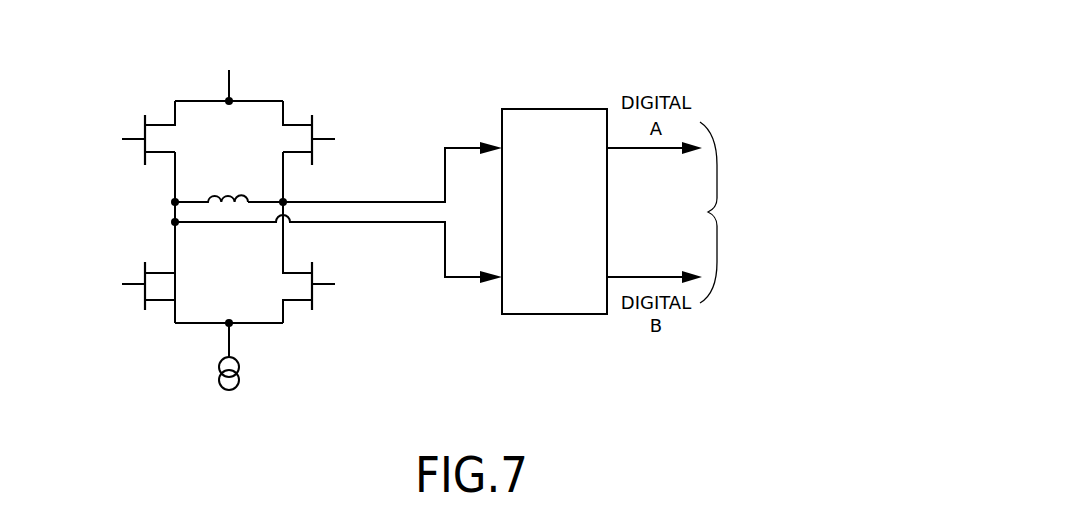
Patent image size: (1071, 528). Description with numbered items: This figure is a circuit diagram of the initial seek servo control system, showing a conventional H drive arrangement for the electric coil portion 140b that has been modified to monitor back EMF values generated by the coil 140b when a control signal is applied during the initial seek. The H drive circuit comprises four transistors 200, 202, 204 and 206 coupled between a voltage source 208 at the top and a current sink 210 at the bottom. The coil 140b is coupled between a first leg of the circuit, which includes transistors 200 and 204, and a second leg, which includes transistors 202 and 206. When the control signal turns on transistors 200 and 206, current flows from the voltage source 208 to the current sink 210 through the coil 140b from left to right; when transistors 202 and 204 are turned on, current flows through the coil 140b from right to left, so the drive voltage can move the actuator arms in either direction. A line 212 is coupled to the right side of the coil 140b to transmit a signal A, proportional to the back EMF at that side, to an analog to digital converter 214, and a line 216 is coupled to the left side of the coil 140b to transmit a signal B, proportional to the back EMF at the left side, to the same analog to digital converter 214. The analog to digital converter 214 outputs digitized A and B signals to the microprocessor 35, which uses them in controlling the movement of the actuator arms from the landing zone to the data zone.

The transistor 200 is at (143, 118).
The transistor 202 is at (313, 125).
The transistor 204 is at (143, 301).
The transistor 206 is at (313, 305).
The voltage source 208 is at (231, 78).
The current sink 210 is at (240, 377).
The electric coil portion 140b is at (208, 202).
The line 212 is at (405, 200).
The line 216 is at (415, 223).
The analog to digital converter 214 is at (566, 109).
The microprocessor 35 is at (806, 212).